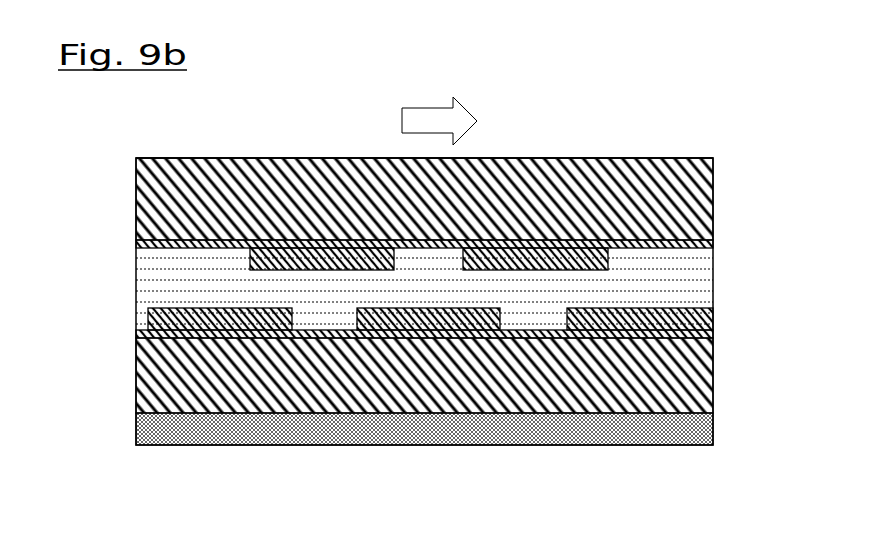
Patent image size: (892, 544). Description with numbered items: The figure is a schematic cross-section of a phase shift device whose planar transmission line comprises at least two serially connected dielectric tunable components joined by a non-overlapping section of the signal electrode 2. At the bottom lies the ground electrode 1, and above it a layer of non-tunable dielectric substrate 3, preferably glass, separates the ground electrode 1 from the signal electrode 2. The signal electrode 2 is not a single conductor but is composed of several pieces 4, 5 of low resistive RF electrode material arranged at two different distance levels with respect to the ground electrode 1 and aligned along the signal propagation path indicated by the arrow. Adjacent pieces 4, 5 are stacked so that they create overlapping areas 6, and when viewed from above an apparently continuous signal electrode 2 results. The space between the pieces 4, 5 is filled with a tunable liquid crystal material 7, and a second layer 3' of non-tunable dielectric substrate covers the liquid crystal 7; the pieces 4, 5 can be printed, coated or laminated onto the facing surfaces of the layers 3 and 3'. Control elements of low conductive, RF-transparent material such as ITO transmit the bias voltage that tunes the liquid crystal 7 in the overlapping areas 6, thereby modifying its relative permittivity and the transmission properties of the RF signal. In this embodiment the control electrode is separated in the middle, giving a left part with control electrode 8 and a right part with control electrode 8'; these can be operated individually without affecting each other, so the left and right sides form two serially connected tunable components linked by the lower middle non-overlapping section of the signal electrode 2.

The ground electrode 1 is at (715, 425).
The signal electrode 2 is at (614, 266).
The non-tunable dielectric substrate 3 is at (468, 374).
The second layer of non-tunable dielectric substrate 3' is at (424, 176).
The pieces of the signal electrode 4 is at (240, 332).
The pieces of the signal electrode 5 is at (287, 240).
The overlapping areas 6 is at (367, 296).
The tunable liquid crystal material 7 is at (185, 288).
The control electrode 8 is at (383, 320).
The control electrode 8' is at (468, 223).